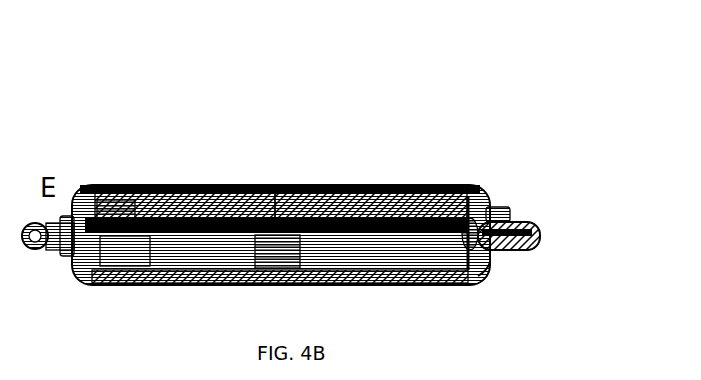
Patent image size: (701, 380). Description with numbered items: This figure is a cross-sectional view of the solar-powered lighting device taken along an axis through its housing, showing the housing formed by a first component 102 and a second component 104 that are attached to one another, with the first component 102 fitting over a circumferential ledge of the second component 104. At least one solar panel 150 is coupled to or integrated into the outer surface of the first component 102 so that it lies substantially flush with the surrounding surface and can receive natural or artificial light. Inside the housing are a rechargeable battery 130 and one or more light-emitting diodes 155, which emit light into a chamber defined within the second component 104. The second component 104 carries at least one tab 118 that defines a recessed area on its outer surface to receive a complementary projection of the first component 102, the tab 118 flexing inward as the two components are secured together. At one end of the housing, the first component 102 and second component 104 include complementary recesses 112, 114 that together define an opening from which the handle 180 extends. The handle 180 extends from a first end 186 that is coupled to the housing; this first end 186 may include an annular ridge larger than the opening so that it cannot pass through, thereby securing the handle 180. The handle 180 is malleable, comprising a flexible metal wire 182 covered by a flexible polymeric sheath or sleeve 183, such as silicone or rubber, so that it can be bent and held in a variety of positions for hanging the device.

The first component 102 is at (88, 186).
The second component 104 is at (170, 285).
The recess 112 is at (507, 212).
The recess 114 is at (497, 258).
The tab 118 is at (287, 253).
The rechargeable battery 130 is at (355, 187).
The solar panel 150 is at (283, 190).
The light-emitting diode 155 is at (252, 190).
The handle 180 is at (43, 250).
The flexible metal wire 182 is at (512, 262).
The flexible polymeric sheath or sleeve 183 is at (502, 262).
The first end 186 is at (492, 200).